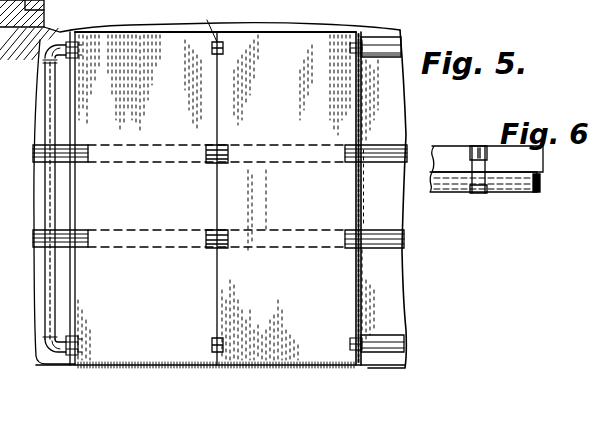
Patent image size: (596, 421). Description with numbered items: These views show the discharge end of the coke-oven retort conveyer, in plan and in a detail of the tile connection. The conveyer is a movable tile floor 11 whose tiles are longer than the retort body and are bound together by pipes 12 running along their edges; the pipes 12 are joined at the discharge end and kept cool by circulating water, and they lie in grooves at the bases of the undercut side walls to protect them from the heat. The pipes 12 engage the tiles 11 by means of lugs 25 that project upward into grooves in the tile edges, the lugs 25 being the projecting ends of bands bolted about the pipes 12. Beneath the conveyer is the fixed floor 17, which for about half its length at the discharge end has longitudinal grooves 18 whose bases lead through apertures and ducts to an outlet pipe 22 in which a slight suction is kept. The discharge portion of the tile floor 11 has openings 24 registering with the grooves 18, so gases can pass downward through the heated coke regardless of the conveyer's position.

In FIG. 5, the movable tile floor 11 is at (224, 198).
In FIG. 5, the pipes 12 is at (407, 33).
In FIG. 6, the pipes 12 is at (530, 178).
In FIG. 5, the fixed floor 17 is at (377, 194).
In FIG. 5, the longitudinal grooves 18 is at (407, 147).
In FIG. 5, the outlet pipe 22 is at (86, 6).
In FIG. 5, the openings 24 is at (207, 230).
In FIG. 6, the lugs 25 is at (478, 146).